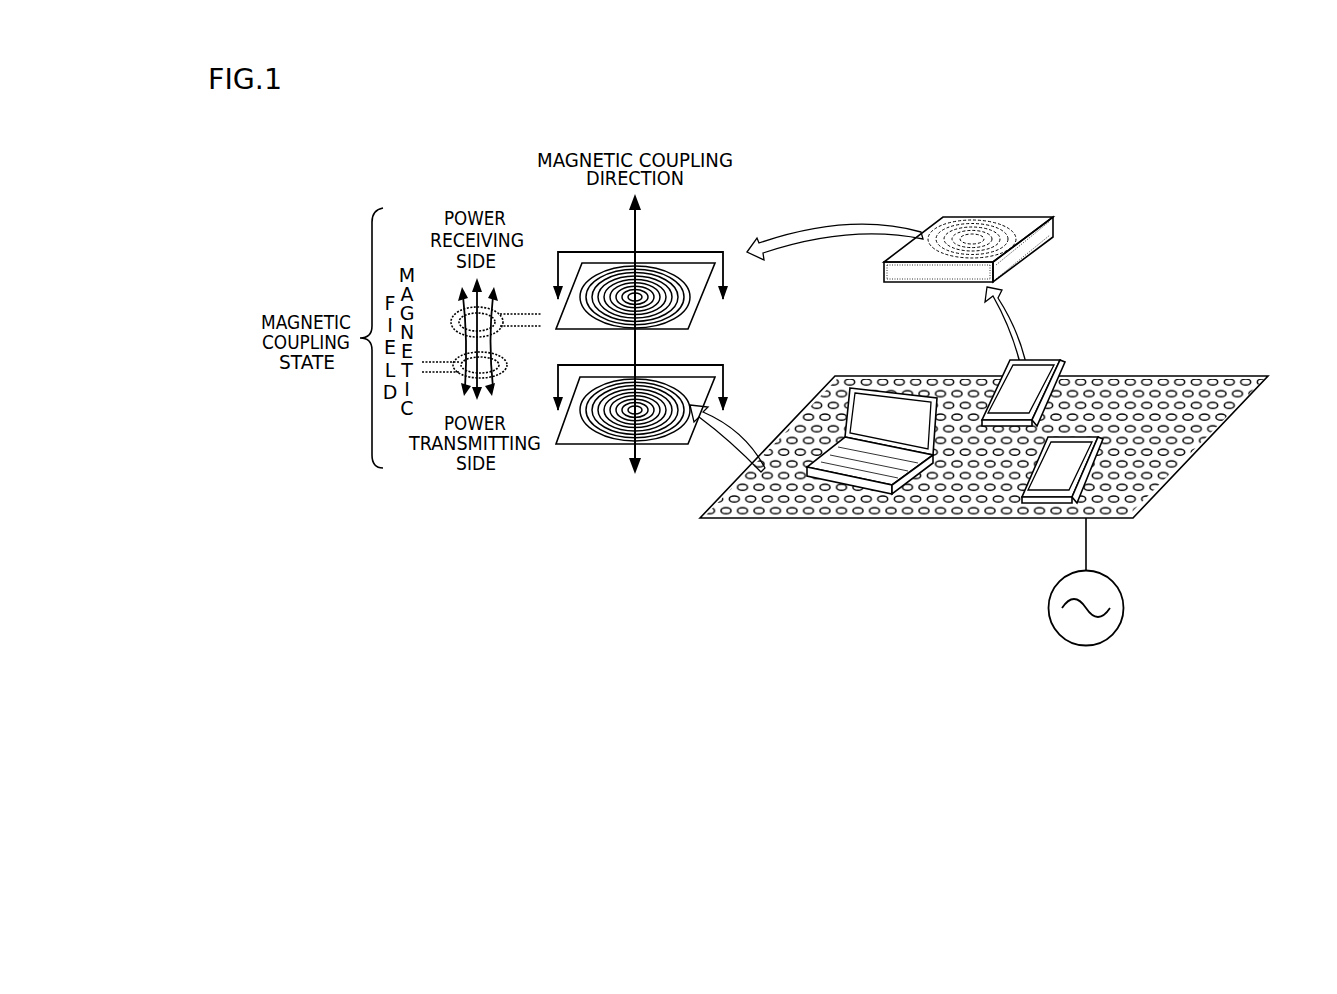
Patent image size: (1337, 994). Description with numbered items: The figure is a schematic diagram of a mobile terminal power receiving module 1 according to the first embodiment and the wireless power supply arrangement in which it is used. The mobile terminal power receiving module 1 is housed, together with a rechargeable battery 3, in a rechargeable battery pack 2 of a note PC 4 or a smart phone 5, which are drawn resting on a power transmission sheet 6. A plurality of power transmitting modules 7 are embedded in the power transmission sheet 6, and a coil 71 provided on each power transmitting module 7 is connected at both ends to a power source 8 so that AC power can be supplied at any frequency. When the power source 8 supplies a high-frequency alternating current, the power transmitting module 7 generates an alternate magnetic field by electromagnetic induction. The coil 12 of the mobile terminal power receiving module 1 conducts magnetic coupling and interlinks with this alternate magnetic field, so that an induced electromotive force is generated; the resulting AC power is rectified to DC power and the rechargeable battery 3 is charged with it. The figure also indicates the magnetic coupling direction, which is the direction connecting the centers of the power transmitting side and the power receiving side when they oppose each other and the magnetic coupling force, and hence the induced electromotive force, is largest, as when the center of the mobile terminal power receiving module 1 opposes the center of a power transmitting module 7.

The mobile terminal power receiving module 1 is at (727, 226).
The rechargeable battery pack 2 is at (993, 251).
The rechargeable battery 3 is at (920, 272).
The note PC 4 is at (872, 467).
The smart phone 5 is at (1070, 462).
The power transmission sheet 6 is at (1218, 352).
The power transmitting module 7 is at (735, 366).
The power source 8 is at (1124, 610).
The coil 12 is at (612, 323).
The coil 71 is at (610, 438).